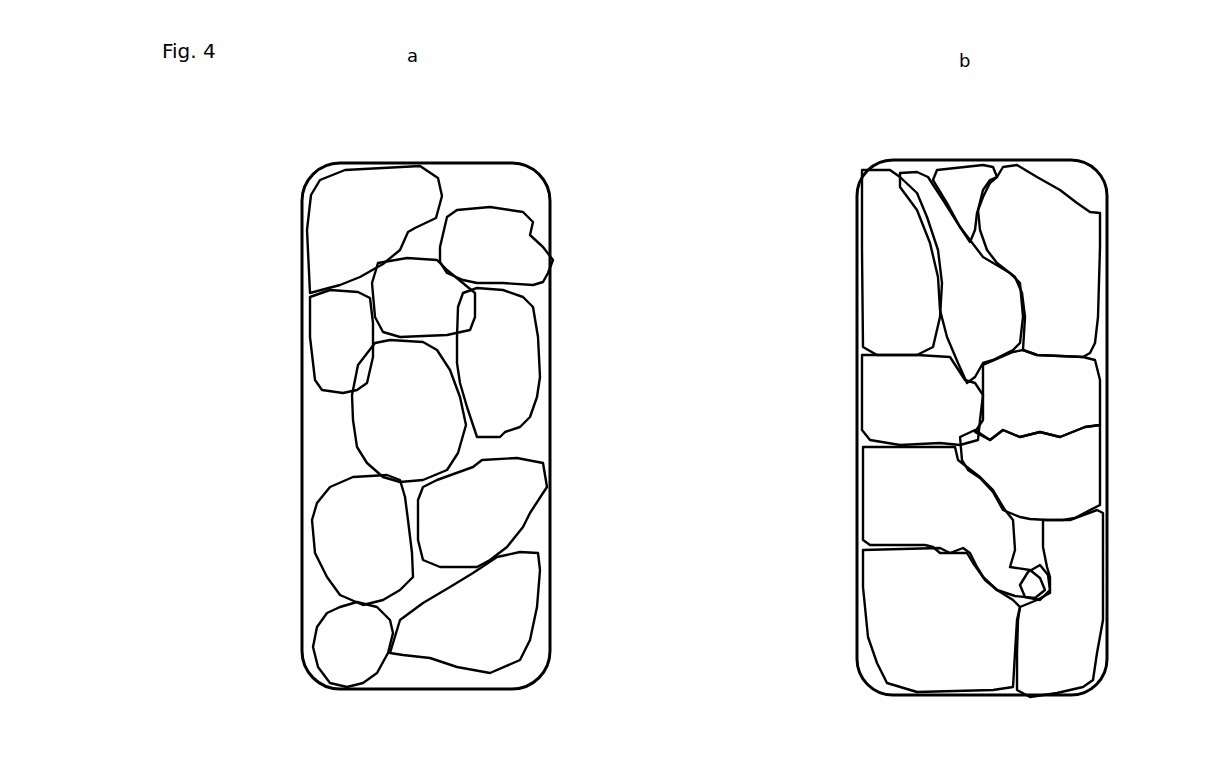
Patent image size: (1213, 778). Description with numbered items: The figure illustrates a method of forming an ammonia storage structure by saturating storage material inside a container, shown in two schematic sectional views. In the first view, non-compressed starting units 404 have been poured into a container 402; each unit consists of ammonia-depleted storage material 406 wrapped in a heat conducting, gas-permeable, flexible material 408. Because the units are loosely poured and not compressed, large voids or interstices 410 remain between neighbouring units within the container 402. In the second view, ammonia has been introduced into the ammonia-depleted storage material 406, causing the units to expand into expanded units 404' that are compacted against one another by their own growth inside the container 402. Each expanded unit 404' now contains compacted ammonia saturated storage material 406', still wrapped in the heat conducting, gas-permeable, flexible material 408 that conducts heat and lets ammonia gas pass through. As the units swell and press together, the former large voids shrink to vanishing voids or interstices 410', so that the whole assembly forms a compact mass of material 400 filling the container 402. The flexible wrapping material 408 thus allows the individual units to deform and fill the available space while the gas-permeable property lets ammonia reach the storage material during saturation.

The compact mass of material 400 is at (862, 663).
The container 402 is at (550, 527).
The non-compressed starting units 404 is at (500, 221).
The expanded units 404' is at (883, 183).
The ammonia-depleted storage material 406 is at (544, 322).
The compacted ammonia saturated storage material 406' is at (872, 280).
The heat conducting gas-permeable flexible material 408 is at (480, 422).
The voids or interstices 410 is at (316, 540).
The vanishing voids or interstices 410' is at (1099, 582).